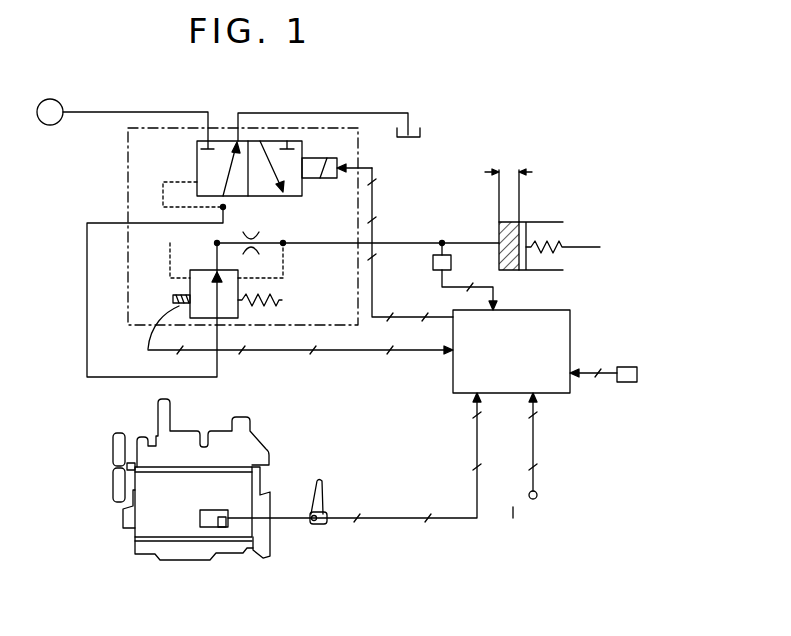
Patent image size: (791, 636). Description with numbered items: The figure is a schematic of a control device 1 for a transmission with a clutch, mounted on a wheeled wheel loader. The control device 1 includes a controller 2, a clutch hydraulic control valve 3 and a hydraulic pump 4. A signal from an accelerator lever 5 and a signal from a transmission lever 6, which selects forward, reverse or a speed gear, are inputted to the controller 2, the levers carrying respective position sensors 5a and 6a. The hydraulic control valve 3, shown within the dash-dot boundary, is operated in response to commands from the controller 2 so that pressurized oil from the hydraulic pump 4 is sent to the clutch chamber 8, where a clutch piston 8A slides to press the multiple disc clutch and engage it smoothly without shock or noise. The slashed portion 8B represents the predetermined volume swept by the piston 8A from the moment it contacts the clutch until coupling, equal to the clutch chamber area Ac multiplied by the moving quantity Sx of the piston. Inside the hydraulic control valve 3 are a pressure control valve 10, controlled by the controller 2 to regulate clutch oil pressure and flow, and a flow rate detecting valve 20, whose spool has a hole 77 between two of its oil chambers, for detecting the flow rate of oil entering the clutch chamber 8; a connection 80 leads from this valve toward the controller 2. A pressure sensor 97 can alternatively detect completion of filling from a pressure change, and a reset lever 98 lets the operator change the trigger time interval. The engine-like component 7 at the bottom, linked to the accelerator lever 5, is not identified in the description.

The control device 1 is at (576, 197).
The controller 2 is at (570, 325).
The clutch hydraulic control valve 3 is at (126, 167).
The hydraulic pump 4 is at (53, 99).
The accelerator lever 5 is at (322, 481).
The position sensor 5a is at (324, 523).
The transmission lever 6 is at (537, 473).
The position sensor 6a is at (537, 497).
The engine 7 is at (197, 560).
The clutch chamber 8 is at (507, 222).
The clutch piston 8A is at (527, 233).
The slashed portion 8B is at (510, 270).
The pressure control valve 10 is at (316, 152).
The flow rate detecting valve 20 is at (168, 285).
The hole 77 is at (252, 228).
The control signal line 80 is at (148, 349).
The pressure sensor 97 is at (437, 272).
The reset lever 98 is at (627, 367).
The clutch chamber area Ac is at (499, 238).
The moving quantity of the clutch piston Sx is at (521, 190).